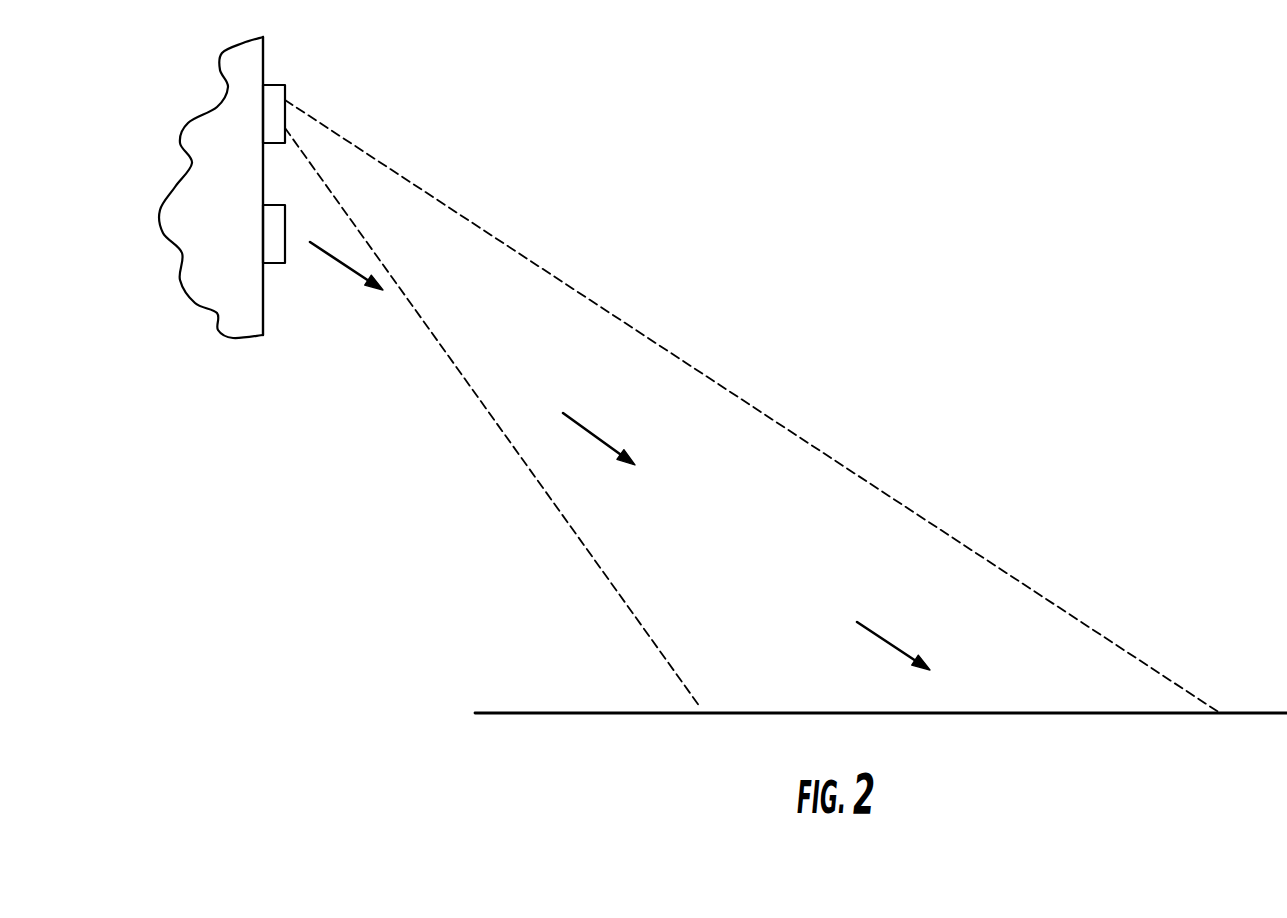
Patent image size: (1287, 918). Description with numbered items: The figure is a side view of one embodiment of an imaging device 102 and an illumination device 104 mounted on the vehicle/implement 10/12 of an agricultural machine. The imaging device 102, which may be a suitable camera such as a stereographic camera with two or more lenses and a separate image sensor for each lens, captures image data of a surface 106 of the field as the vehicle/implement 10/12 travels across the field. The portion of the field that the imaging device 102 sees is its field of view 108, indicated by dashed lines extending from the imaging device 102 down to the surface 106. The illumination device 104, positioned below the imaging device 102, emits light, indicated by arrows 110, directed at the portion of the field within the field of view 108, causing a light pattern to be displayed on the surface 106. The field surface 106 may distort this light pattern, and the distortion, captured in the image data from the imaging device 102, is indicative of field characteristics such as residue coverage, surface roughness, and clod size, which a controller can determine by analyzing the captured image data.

The vehicle 10 is at (187, 187).
The implement 12 is at (210, 200).
The imaging device 102 is at (275, 92).
The illumination device 104 is at (285, 252).
The surface 106 is at (557, 712).
The field of view 108 is at (535, 258).
The arrows 110 is at (343, 267).